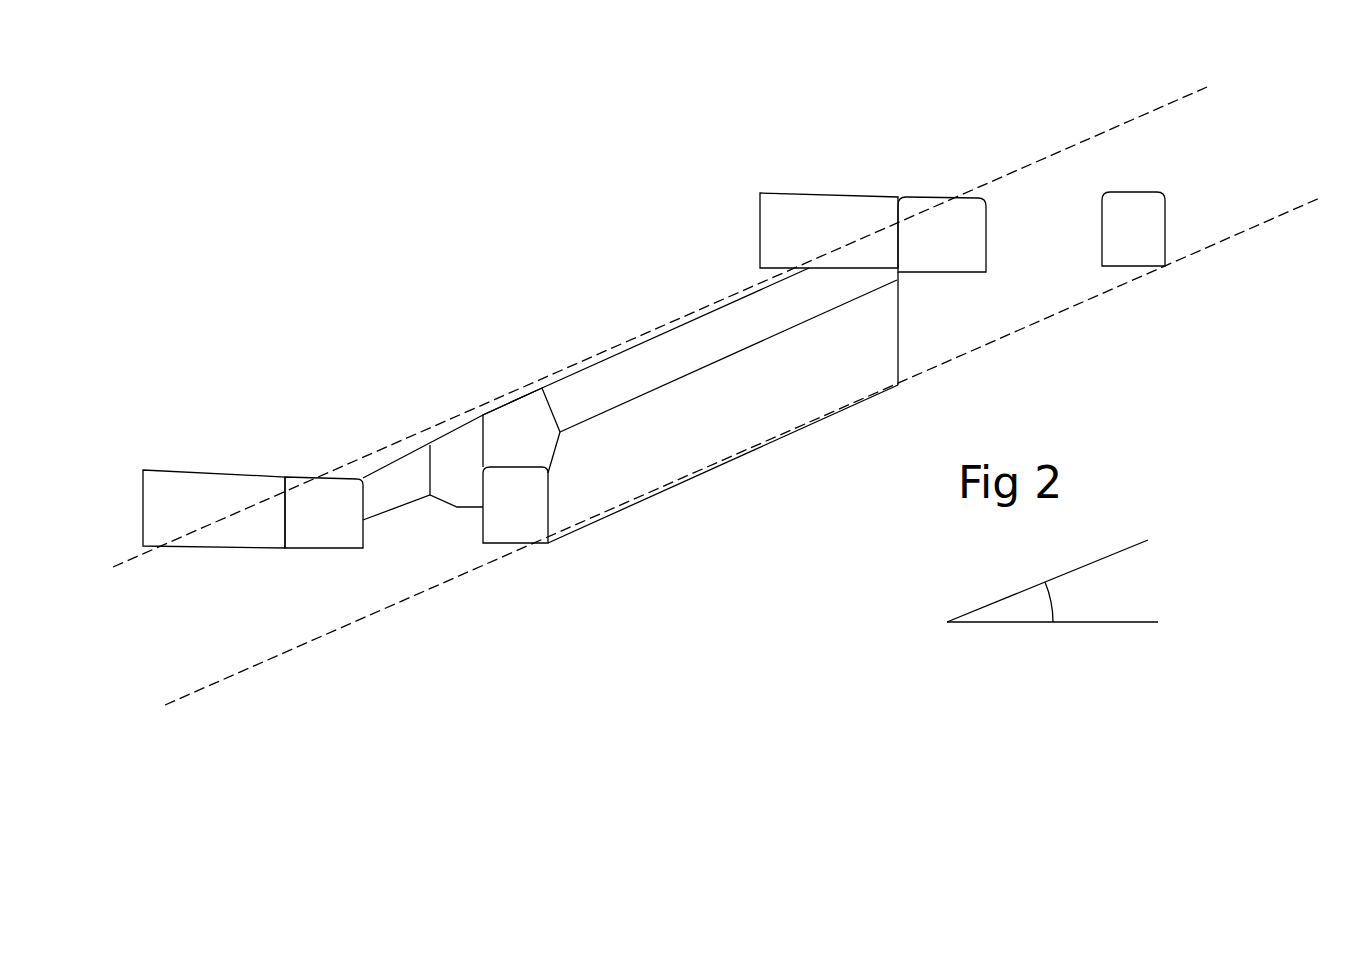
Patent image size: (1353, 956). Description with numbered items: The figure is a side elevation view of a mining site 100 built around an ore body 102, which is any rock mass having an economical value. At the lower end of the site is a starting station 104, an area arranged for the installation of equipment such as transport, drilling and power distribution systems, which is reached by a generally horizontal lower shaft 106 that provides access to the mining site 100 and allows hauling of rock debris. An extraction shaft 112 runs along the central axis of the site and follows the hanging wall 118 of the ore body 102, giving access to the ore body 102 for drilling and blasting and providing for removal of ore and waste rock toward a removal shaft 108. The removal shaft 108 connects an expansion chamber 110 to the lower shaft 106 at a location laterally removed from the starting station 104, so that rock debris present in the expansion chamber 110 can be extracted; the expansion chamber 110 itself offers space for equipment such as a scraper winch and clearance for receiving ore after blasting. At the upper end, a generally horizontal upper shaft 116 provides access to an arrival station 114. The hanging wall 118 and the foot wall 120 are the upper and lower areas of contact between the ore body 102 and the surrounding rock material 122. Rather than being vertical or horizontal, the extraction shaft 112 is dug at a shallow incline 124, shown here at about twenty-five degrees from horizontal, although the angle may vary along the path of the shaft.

The mining site 100 is at (300, 118).
The ore body 102 is at (738, 459).
The starting station 104 is at (143, 497).
The lower shaft 106 is at (328, 476).
The removal shaft 108 is at (517, 546).
The expansion chamber 110 is at (458, 427).
The extraction shaft 112 is at (390, 457).
The arrival station 114 is at (759, 220).
The upper shaft 116 is at (947, 196).
The hanging wall 118 is at (660, 314).
The foot wall 120 is at (743, 451).
The rock material 122 is at (656, 593).
The incline 124 is at (1056, 602).